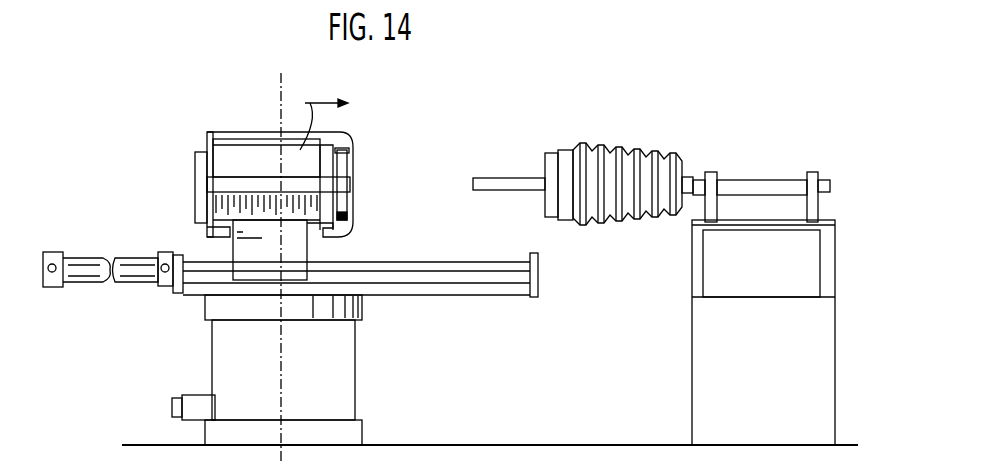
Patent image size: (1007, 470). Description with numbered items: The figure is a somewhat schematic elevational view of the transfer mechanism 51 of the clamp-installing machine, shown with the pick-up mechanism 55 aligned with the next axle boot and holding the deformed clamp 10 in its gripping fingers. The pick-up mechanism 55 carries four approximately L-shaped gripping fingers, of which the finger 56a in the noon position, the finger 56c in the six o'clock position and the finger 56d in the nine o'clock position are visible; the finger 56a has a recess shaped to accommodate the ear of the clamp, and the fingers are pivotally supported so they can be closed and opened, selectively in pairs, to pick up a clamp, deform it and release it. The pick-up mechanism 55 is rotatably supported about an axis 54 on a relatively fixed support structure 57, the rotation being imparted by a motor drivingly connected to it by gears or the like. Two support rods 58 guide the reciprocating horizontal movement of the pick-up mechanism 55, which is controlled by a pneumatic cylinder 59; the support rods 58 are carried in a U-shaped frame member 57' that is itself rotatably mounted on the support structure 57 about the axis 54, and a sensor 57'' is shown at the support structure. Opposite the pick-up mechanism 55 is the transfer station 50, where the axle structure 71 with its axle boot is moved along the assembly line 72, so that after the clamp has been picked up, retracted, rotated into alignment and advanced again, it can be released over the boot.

The workpiece 10 is at (348, 211).
The transfer station 50 is at (672, 118).
The transfer mechanism 51 is at (402, 205).
The axis 54 is at (280, 96).
The pick-up mechanism 55 is at (233, 152).
The gripping finger 56a is at (345, 134).
The gripping finger 56c is at (350, 236).
The gripping finger 56d is at (350, 184).
The support structure 57 is at (301, 382).
The U-shaped frame member 57' is at (364, 314).
The sensor 57'' is at (165, 401).
The support rods 58 is at (455, 268).
The pneumatic cylinder 59 is at (120, 278).
The axle structure 71 is at (757, 180).
The assembly line 72 is at (838, 210).